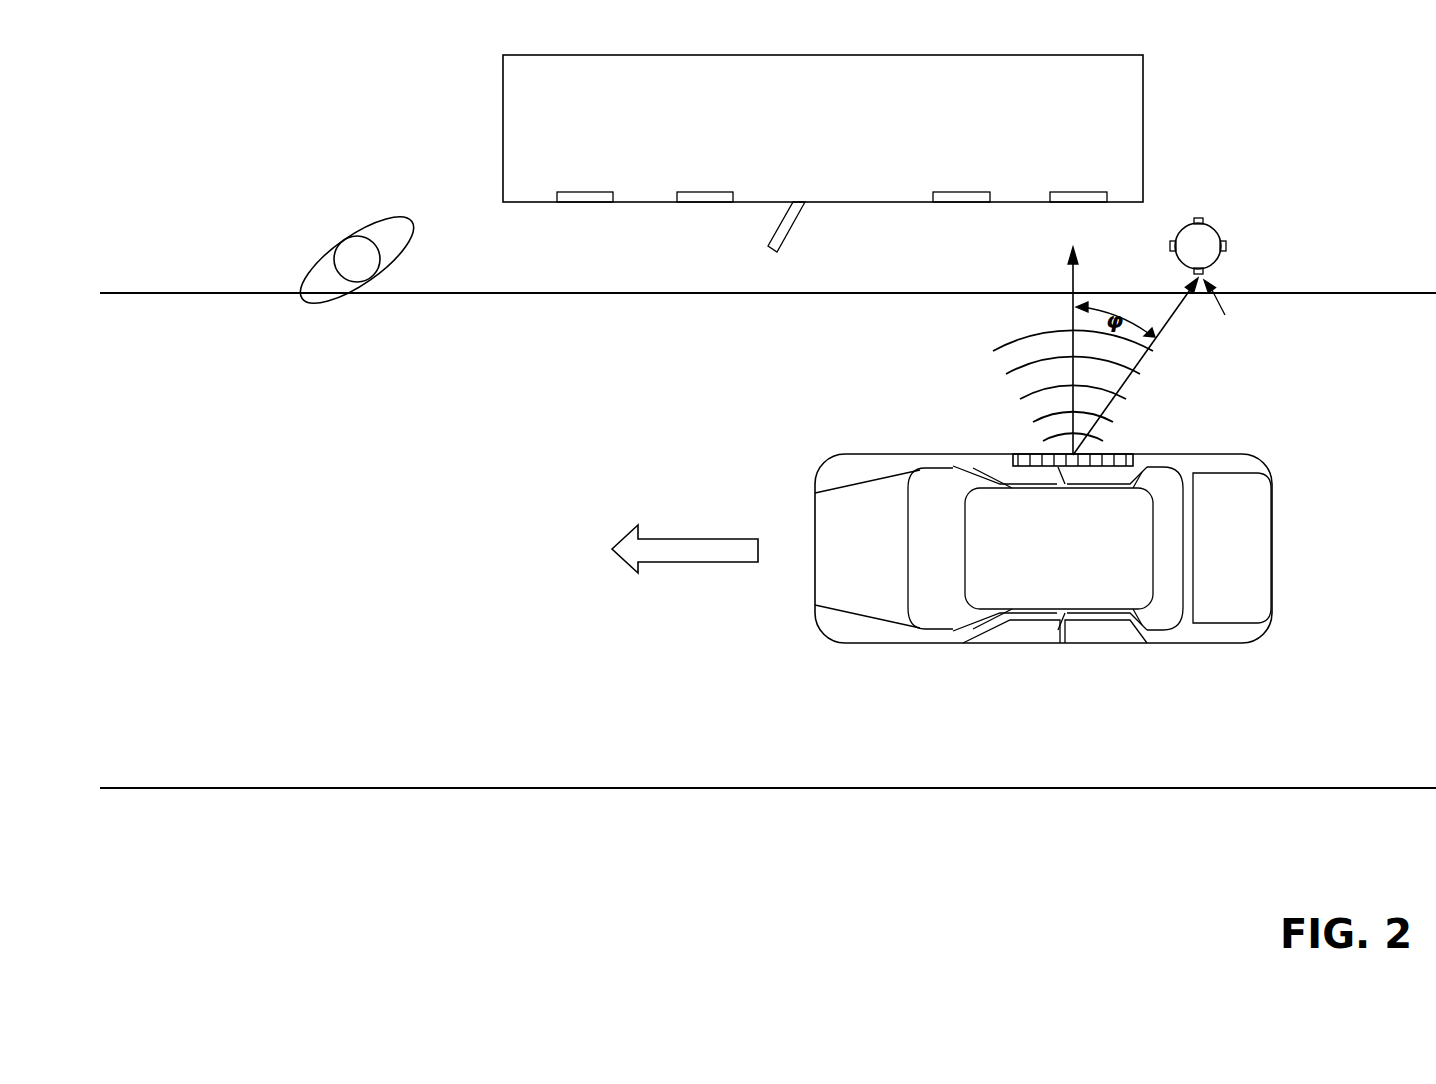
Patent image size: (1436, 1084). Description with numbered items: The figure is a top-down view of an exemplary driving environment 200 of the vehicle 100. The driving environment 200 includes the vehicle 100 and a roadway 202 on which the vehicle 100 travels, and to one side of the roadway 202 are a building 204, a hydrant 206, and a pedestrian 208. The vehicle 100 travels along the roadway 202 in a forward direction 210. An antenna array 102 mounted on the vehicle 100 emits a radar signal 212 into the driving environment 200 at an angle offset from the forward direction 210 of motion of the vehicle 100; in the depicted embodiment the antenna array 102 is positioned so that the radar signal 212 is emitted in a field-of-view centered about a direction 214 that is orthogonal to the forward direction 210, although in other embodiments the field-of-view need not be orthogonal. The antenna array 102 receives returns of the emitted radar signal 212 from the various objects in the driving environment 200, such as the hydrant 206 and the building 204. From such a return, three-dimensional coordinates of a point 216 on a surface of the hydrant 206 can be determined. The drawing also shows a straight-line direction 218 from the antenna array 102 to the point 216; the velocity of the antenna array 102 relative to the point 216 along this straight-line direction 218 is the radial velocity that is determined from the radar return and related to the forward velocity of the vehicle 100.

The vehicle 100 is at (1218, 632).
The antenna array 102 is at (1100, 455).
The driving environment 200 is at (155, 102).
The roadway 202 is at (1310, 292).
The building 204 is at (1143, 128).
The hydrant 206 is at (1220, 232).
The pedestrian 208 is at (340, 232).
The forward direction 210 is at (667, 538).
The radar signal 212 is at (1000, 347).
The direction 214 is at (1068, 267).
The point 216 is at (1225, 315).
The straight-line direction 218 is at (1142, 363).